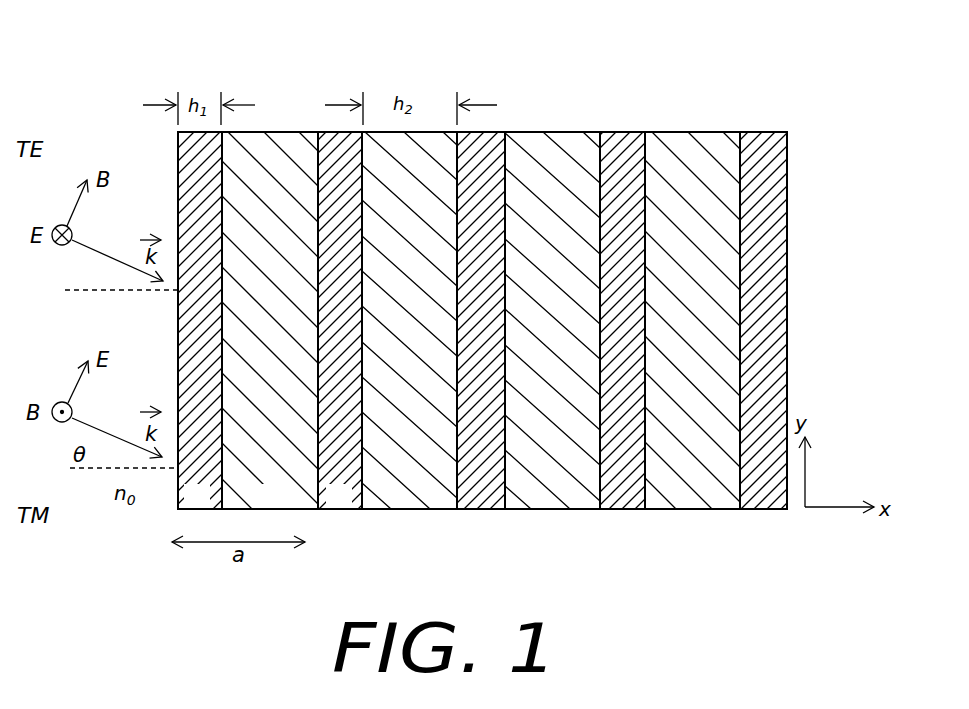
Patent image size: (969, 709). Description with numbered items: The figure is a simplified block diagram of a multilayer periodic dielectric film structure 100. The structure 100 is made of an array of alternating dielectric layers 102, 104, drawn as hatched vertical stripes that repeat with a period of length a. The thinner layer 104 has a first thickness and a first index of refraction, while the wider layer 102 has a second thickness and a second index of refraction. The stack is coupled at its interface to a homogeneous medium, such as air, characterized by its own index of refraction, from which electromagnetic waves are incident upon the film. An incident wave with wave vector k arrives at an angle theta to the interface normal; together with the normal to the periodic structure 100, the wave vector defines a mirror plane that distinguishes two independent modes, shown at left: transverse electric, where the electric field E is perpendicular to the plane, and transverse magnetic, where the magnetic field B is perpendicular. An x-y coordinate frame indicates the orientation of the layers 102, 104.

The multilayer periodic dielectric film structure 100 is at (482, 255).
The dielectric layer 102 is at (687, 143).
The dielectric layer 104 is at (633, 142).